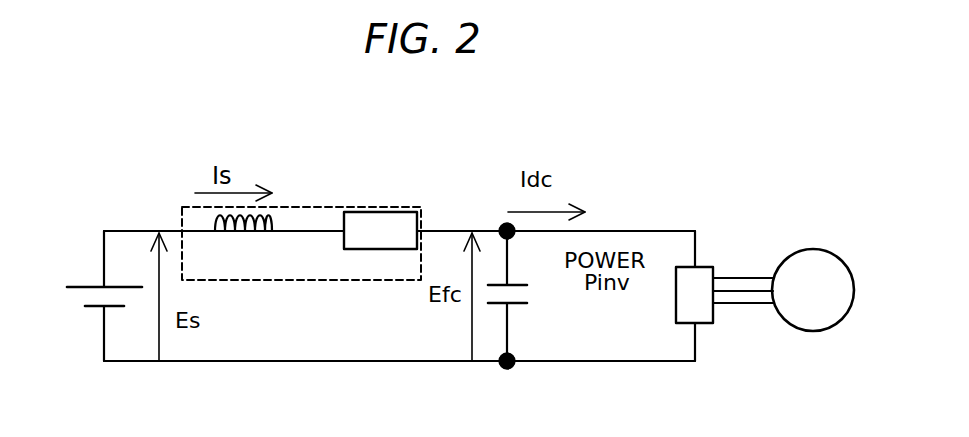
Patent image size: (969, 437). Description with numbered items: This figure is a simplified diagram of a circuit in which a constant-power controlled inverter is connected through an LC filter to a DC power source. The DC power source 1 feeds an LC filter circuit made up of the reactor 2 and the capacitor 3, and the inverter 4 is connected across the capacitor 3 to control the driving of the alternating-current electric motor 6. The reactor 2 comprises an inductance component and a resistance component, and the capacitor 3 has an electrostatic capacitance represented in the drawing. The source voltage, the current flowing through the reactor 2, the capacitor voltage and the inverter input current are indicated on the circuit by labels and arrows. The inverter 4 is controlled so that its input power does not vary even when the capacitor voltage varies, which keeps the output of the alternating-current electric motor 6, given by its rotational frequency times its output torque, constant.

The DC power source 1 is at (93, 283).
The reactor 2 is at (305, 207).
The capacitor 3 is at (519, 305).
The inverter 4 is at (704, 267).
The alternating-current electric motor 6 is at (812, 250).